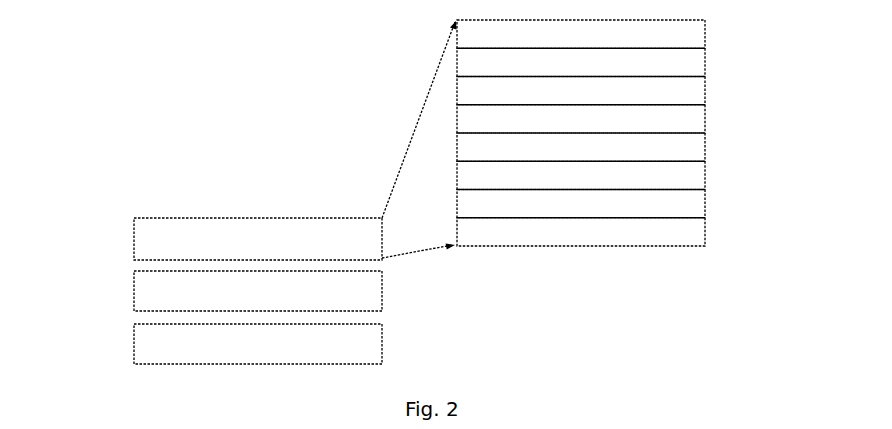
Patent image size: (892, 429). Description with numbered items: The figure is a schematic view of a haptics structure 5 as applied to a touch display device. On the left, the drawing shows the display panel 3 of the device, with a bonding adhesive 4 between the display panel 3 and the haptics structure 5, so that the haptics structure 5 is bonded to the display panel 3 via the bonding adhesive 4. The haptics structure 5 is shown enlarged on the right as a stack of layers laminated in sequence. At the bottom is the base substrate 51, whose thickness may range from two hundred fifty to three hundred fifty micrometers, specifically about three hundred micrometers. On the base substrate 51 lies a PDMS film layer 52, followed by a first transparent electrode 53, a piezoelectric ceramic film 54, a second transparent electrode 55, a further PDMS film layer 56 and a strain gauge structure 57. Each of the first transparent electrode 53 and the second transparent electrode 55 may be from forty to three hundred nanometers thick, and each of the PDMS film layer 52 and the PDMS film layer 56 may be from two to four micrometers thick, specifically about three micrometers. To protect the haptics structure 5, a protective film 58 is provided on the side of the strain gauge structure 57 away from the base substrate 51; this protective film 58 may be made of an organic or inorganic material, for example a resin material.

The display panel 3 is at (134, 347).
The bonding adhesive 4 is at (134, 295).
The haptics structure 5 is at (134, 243).
The base substrate 51 is at (705, 222).
The PDMS film layer 52 is at (705, 193).
The first transparent electrode 53 is at (705, 165).
The piezoelectric ceramic film 54 is at (705, 137).
The second transparent electrode 55 is at (705, 113).
The PDMS film layer 56 is at (705, 83).
The strain gauge structure 57 is at (705, 55).
The protective film 58 is at (705, 33).